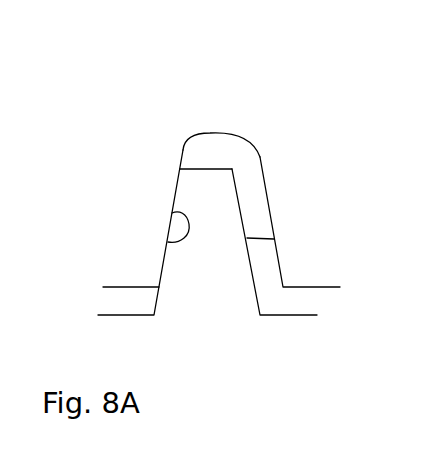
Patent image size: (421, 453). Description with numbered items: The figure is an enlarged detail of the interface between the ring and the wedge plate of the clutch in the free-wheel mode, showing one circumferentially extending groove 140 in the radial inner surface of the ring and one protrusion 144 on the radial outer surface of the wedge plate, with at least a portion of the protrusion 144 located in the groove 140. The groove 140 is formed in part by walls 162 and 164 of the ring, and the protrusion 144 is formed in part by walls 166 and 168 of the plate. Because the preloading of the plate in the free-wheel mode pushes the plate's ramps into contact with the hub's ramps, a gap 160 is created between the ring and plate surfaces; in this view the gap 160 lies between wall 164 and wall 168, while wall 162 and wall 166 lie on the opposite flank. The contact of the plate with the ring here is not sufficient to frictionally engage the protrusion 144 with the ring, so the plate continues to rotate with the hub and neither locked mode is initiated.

The circumferentially extending groove 140 is at (213, 128).
The protrusion 144 is at (197, 205).
The gap 160 is at (268, 208).
The wall 162 is at (177, 190).
The wall 164 is at (265, 181).
The wall 166 is at (168, 242).
The wall 168 is at (274, 239).